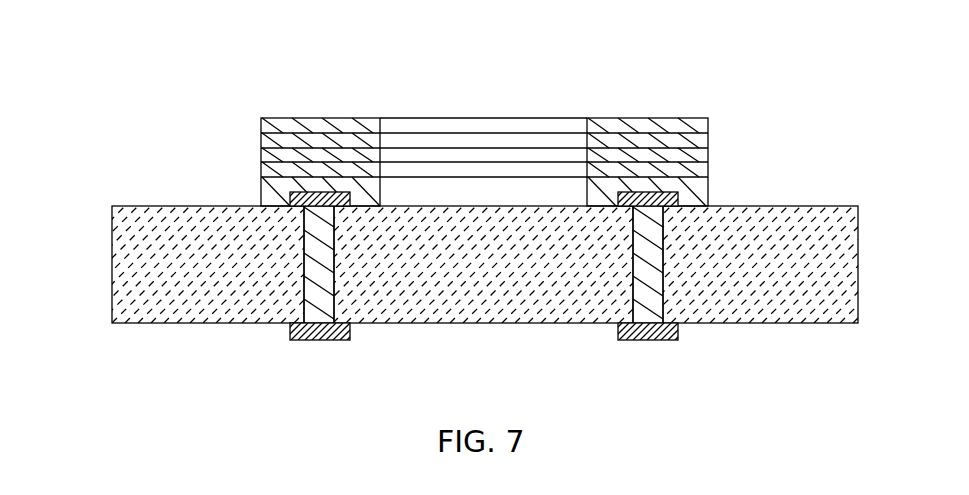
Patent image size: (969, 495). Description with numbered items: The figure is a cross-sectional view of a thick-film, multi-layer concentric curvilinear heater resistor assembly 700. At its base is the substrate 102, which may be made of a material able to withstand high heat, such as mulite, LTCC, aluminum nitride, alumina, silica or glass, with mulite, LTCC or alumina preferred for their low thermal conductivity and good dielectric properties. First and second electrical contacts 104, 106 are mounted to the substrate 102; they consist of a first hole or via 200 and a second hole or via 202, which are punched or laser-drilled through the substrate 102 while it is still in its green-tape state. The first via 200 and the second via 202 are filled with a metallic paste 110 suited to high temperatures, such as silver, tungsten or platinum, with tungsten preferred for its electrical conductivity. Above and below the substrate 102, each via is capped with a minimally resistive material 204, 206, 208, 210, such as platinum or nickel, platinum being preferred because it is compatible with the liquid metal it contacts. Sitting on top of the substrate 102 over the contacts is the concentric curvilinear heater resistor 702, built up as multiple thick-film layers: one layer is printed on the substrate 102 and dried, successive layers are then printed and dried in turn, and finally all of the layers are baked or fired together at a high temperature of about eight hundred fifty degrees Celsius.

The thick-film multi-layer concentric curvilinear heater resistor assembly 700 is at (217, 112).
The concentric curvilinear heater resistor 702 is at (333, 118).
The substrate 102 is at (112, 273).
The first electrical contact 104 is at (303, 248).
The second electrical contact 106 is at (665, 262).
The metallic paste 110 is at (320, 280).
The first hole or via 200 is at (335, 310).
The second hole or via 202 is at (632, 292).
The minimally resistive material cap 204 is at (308, 192).
The minimally resistive material cap 208 is at (643, 193).
The minimally resistive material cap 206 is at (320, 340).
The minimally resistive material cap 210 is at (648, 340).